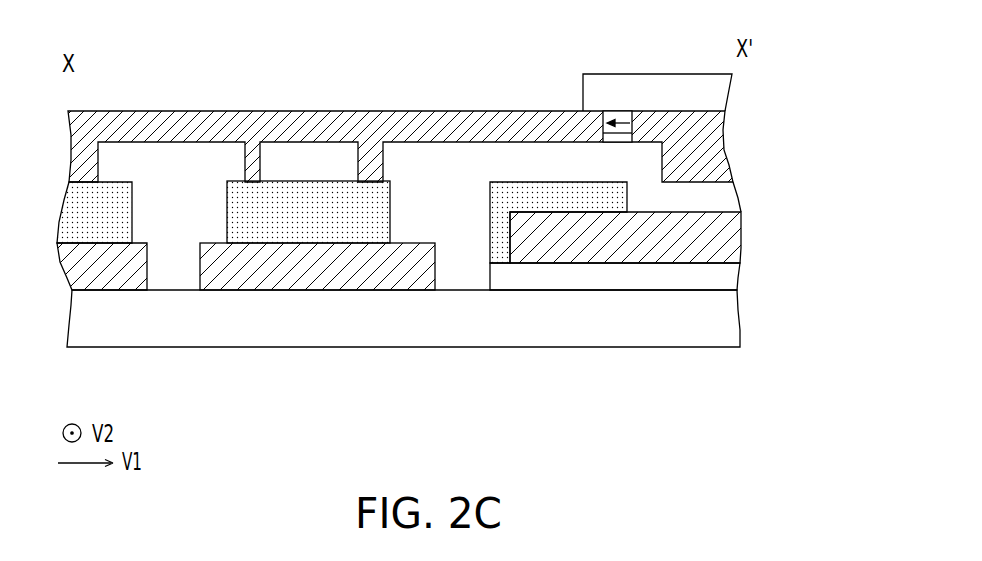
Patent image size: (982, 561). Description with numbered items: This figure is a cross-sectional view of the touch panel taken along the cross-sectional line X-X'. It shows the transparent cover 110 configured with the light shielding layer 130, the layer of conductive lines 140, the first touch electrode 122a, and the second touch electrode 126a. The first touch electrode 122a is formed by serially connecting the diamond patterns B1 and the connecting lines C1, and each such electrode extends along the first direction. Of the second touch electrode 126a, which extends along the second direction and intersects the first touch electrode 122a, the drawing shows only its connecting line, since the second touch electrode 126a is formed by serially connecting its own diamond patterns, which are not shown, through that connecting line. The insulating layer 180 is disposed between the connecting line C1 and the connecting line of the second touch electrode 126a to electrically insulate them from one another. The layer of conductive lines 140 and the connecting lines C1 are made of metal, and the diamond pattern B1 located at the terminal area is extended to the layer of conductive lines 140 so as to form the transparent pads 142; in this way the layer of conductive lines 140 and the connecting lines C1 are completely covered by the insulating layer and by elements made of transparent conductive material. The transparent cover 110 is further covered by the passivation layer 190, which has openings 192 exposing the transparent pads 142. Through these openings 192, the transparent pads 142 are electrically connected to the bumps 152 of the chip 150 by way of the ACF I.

The transparent cover 110 is at (725, 322).
The light shielding layer 130 is at (725, 280).
The layer of conductive lines 140 is at (725, 240).
The transparent pads 142 is at (725, 196).
The chip 150 is at (718, 94).
The bumps 152 is at (632, 128).
The insulating layer 180 is at (310, 217).
The passivation layer 190 is at (720, 160).
The openings 192 is at (620, 125).
The first touch electrode 122a is at (208, 48).
The second touch electrode 126a is at (317, 158).
The diamond pattern B1 is at (153, 152).
The connecting line C1 is at (214, 262).
The ACF I is at (603, 137).